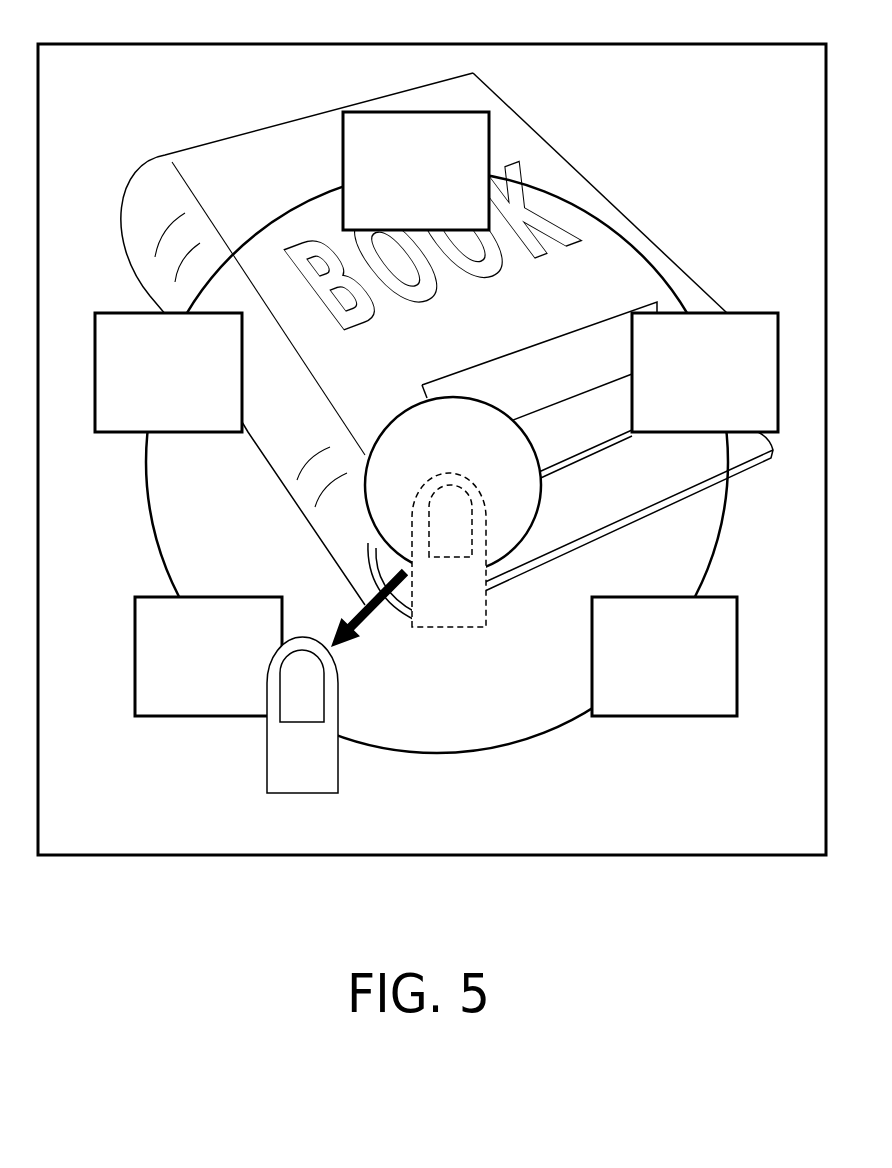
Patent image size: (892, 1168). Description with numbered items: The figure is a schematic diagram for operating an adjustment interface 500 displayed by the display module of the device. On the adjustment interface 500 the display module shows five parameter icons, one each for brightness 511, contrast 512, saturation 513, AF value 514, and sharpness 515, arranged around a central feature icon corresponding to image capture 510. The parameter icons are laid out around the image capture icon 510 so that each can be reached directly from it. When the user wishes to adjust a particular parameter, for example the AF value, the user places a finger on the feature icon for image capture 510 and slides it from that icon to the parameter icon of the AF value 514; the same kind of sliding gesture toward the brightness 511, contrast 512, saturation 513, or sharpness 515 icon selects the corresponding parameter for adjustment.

The adjustment interface 500 is at (717, 43).
The image capture feature icon 510 is at (405, 410).
The brightness parameter icon 511 is at (438, 112).
The contrast parameter icon 512 is at (726, 313).
The saturation parameter icon 513 is at (627, 597).
The AF value parameter icon 514 is at (232, 597).
The sharpness parameter icon 515 is at (158, 313).